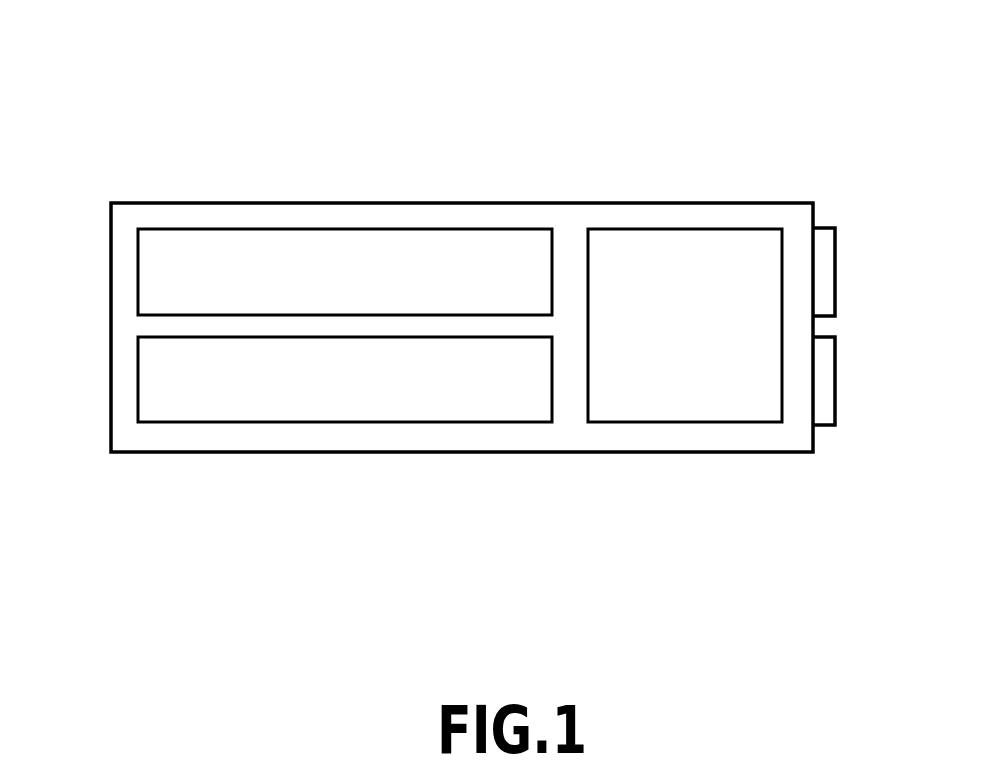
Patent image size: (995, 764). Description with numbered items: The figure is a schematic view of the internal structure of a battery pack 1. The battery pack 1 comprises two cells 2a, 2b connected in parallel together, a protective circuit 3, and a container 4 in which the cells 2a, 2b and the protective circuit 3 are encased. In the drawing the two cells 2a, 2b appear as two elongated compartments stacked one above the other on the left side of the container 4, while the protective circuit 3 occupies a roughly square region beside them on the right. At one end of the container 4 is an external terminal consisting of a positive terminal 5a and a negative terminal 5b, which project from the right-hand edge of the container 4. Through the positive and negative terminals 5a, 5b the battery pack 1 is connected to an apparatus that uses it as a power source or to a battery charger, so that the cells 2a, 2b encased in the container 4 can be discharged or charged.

The battery pack 1 is at (563, 146).
The cell 2a is at (137, 272).
The cell 2b is at (137, 380).
The protective circuit 3 is at (762, 236).
The container 4 is at (728, 454).
The positive terminal 5a is at (836, 266).
The negative terminal 5b is at (836, 380).